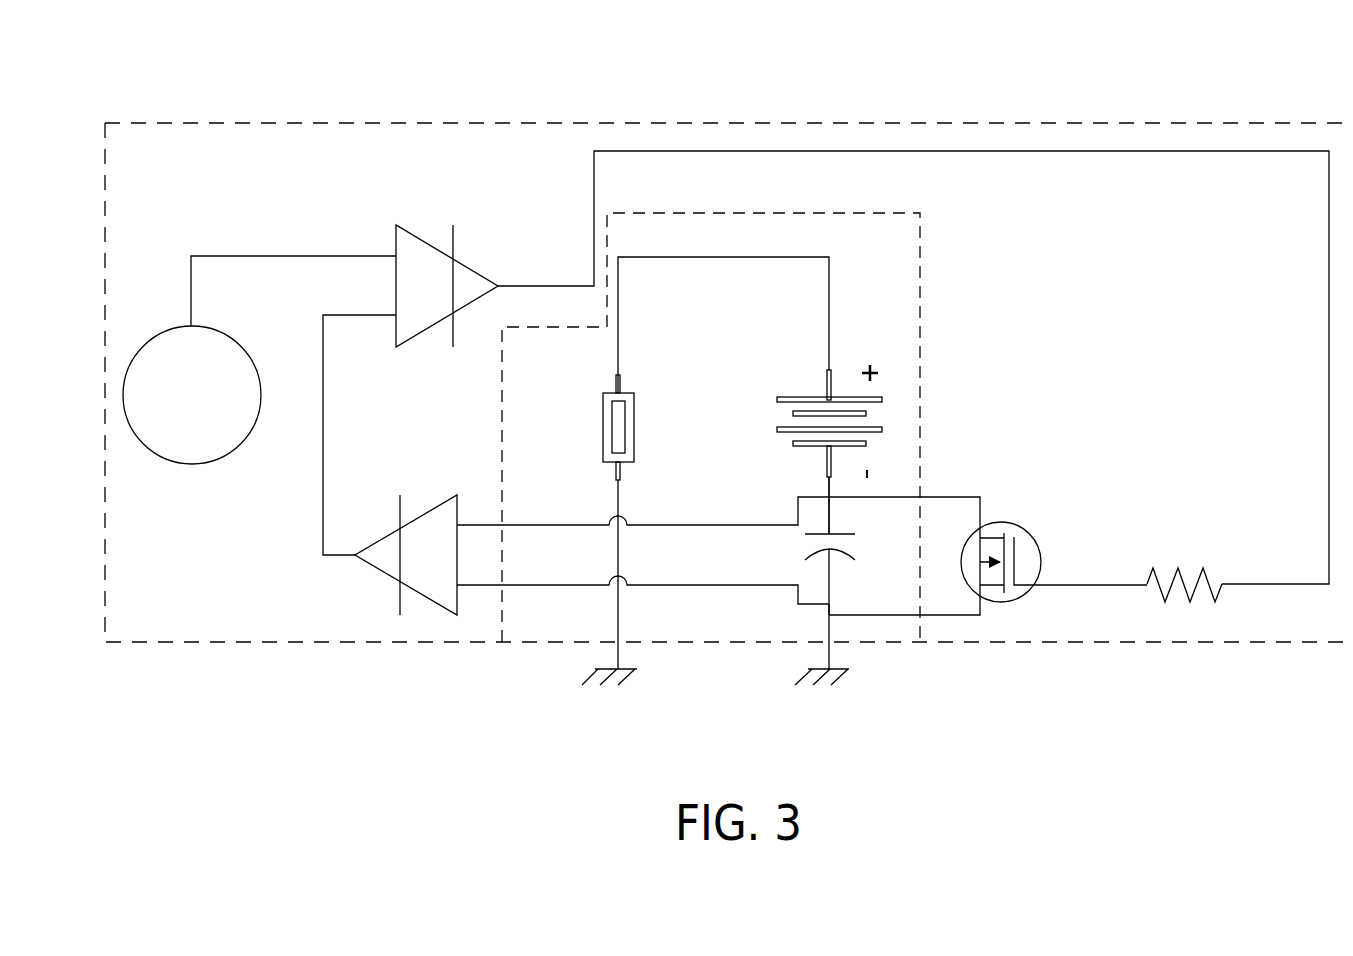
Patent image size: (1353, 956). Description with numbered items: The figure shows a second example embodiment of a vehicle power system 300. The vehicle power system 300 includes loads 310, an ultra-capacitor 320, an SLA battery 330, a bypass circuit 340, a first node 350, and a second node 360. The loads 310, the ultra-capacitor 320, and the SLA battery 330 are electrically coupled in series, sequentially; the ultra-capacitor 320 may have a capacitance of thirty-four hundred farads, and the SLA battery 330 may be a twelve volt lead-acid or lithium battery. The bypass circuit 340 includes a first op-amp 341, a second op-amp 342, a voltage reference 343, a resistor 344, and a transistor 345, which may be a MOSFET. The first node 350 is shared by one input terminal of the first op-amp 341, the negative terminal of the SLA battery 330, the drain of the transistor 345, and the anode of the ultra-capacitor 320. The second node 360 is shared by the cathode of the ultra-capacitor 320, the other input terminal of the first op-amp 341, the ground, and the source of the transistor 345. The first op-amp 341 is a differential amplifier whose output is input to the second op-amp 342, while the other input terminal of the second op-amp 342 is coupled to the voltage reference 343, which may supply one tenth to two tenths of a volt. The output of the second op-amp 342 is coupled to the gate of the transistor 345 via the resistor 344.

The vehicle power system 300 is at (1181, 74).
The loads 310 is at (603, 440).
The ultra-capacitor 320 is at (805, 548).
The SLA battery 330 is at (790, 398).
The bypass circuit 340 is at (248, 642).
The first op-amp 341 is at (378, 572).
The second op-amp 342 is at (396, 283).
The voltage reference 343 is at (188, 464).
The resistor 344 is at (1165, 575).
The transistor 345 is at (1003, 522).
The first node 350 is at (827, 496).
The second node 360 is at (827, 605).